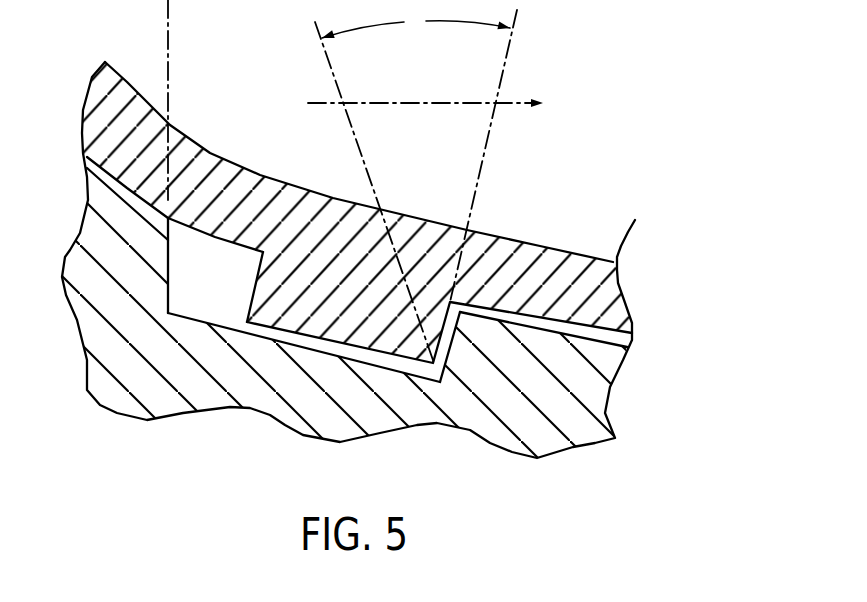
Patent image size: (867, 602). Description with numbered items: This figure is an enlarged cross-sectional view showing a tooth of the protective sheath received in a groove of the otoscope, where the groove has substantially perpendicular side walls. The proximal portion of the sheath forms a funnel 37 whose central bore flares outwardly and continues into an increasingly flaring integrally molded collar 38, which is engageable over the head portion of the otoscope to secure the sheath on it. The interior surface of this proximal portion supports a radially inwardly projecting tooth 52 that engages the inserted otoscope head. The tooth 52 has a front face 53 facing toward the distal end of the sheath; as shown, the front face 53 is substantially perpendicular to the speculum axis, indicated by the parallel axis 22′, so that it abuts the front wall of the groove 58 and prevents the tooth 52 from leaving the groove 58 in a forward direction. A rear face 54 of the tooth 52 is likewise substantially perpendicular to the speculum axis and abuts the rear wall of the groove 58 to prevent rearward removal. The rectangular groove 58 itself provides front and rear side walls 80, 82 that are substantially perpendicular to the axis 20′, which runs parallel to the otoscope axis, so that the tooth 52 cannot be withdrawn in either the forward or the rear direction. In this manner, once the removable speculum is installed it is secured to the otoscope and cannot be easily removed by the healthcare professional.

The funnel 37 is at (540, 273).
The integrally molded collar 38 is at (203, 157).
The tooth 52 is at (333, 331).
The front face 53 is at (455, 330).
The rear face 54 is at (256, 288).
The groove 58 is at (376, 382).
The front side wall 80 is at (447, 362).
The rear side wall 82 is at (168, 246).
The axis 20′ is at (415, 103).
The axis 22′ is at (342, 181).